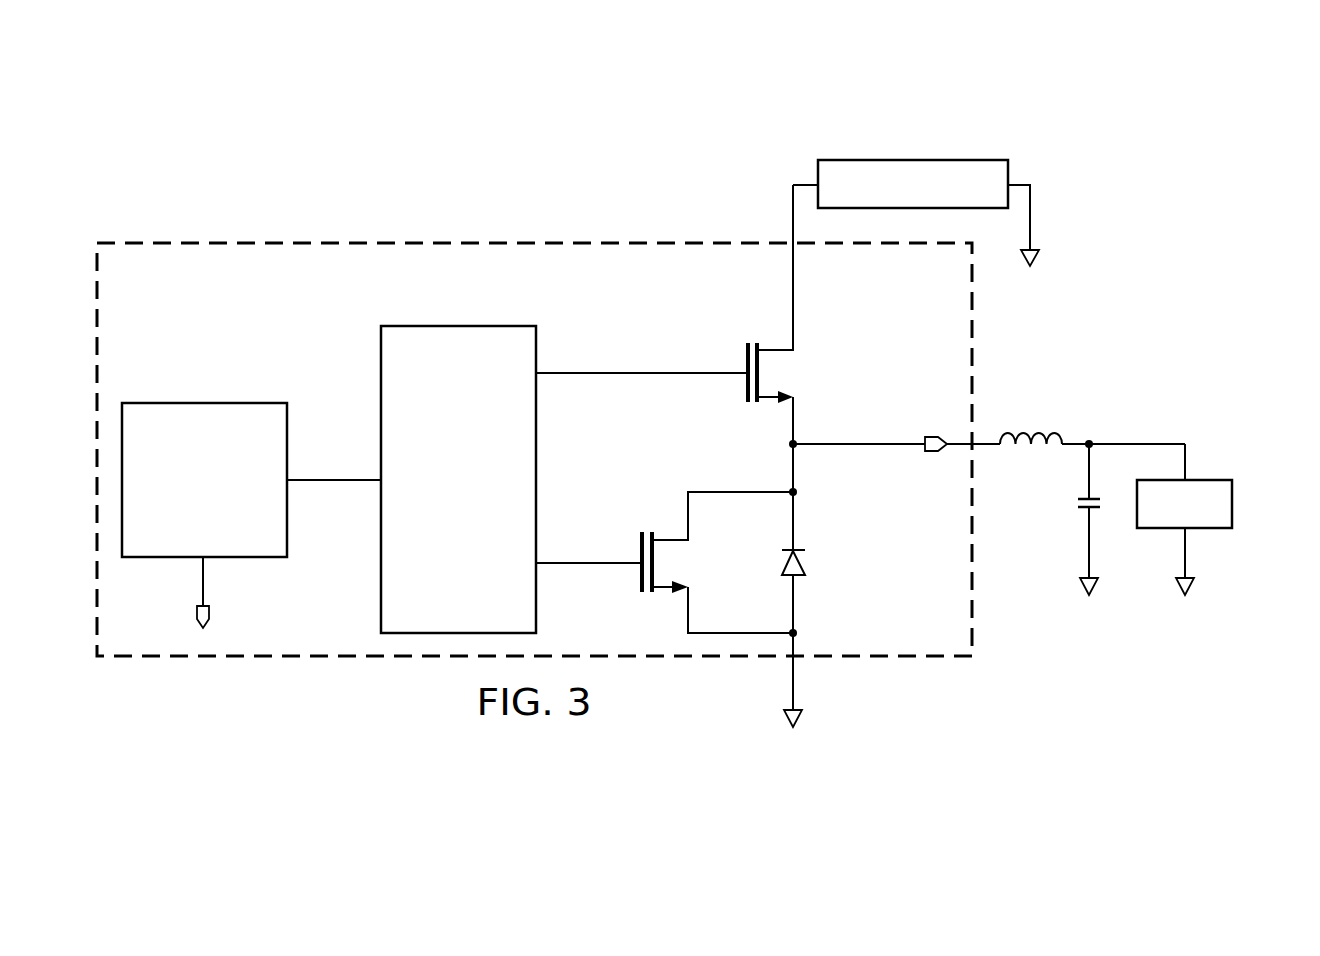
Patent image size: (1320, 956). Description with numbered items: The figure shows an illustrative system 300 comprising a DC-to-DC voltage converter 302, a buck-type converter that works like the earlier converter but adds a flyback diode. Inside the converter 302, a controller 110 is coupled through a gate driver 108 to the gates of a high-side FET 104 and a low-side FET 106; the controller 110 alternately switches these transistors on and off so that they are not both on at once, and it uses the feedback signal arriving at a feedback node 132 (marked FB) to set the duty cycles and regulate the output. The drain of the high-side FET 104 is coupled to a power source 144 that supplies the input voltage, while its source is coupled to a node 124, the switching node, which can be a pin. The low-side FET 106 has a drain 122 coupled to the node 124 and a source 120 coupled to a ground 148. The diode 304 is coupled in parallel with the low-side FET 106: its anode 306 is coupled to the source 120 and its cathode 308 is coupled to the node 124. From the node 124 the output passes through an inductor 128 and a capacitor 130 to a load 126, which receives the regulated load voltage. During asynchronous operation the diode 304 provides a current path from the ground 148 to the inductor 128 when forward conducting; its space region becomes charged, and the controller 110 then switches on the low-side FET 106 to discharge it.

The system 300 is at (198, 50).
The DC-to-DC voltage converter 302 is at (378, 240).
The controller 110 is at (181, 402).
The feedback node 132 is at (197, 612).
The gate driver 108 is at (457, 325).
The high-side FET 104 is at (746, 362).
The low-side FET 106 is at (640, 574).
The drain 122 is at (690, 527).
The source 120 is at (690, 597).
The cathode 308 is at (797, 528).
The diode 304 is at (805, 566).
The anode 306 is at (797, 600).
The ground 148 is at (802, 720).
The power source 144 is at (913, 159).
The node 124 is at (931, 436).
The inductor 128 is at (1035, 432).
The capacitor 130 is at (1077, 504).
The load 126 is at (1234, 505).